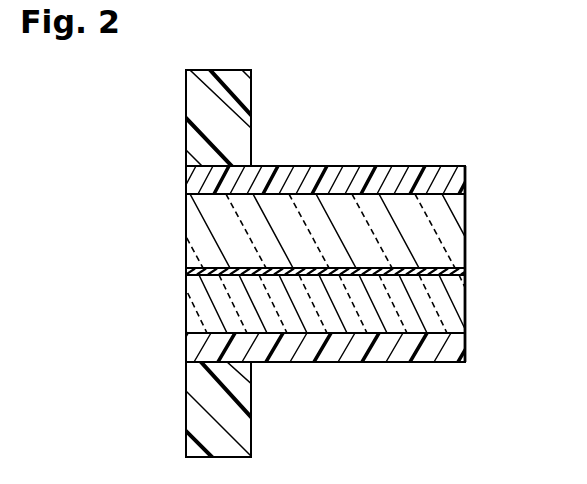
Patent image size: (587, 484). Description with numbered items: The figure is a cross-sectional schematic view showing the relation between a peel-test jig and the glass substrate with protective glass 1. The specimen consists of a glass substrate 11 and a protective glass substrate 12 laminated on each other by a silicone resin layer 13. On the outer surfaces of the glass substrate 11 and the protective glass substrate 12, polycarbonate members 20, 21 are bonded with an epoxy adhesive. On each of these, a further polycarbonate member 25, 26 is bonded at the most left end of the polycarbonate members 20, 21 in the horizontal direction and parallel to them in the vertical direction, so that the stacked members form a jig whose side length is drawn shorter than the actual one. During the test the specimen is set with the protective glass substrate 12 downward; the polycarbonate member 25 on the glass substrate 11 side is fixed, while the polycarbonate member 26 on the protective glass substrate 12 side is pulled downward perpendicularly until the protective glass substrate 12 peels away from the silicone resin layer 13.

The glass substrate with protective glass 1 is at (333, 263).
The glass substrate 11 is at (459, 212).
The protective glass substrate 12 is at (335, 304).
The silicone resin layer 13 is at (461, 271).
The polycarbonate member 20 is at (458, 183).
The polycarbonate member 21 is at (457, 350).
The polycarbonate member 25 is at (238, 128).
The polycarbonate member 26 is at (238, 392).